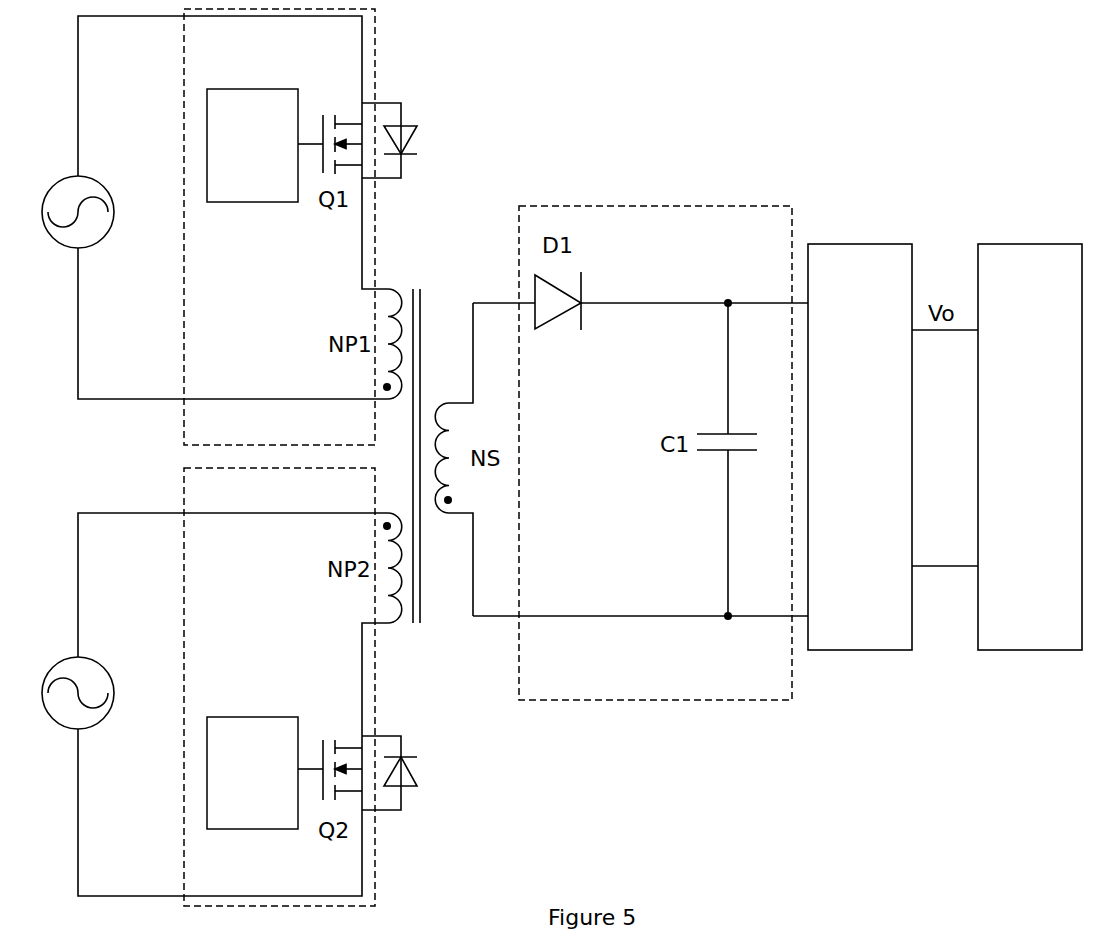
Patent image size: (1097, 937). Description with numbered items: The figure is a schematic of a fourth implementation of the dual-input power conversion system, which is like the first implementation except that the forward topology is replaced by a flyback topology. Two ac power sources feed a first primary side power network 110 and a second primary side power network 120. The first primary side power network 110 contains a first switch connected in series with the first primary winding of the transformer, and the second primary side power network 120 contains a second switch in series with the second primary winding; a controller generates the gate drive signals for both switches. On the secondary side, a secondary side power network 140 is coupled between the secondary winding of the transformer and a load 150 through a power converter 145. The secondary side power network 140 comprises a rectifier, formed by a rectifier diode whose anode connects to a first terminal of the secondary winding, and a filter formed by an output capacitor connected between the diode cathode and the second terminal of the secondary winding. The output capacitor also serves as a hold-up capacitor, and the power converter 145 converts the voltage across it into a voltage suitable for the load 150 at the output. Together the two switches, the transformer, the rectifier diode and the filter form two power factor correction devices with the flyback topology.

The first primary side power network 110 is at (248, 437).
The second primary side power network 120 is at (248, 497).
The secondary side power network 140 is at (678, 687).
The power converter 145 is at (840, 461).
The load 150 is at (1010, 461).